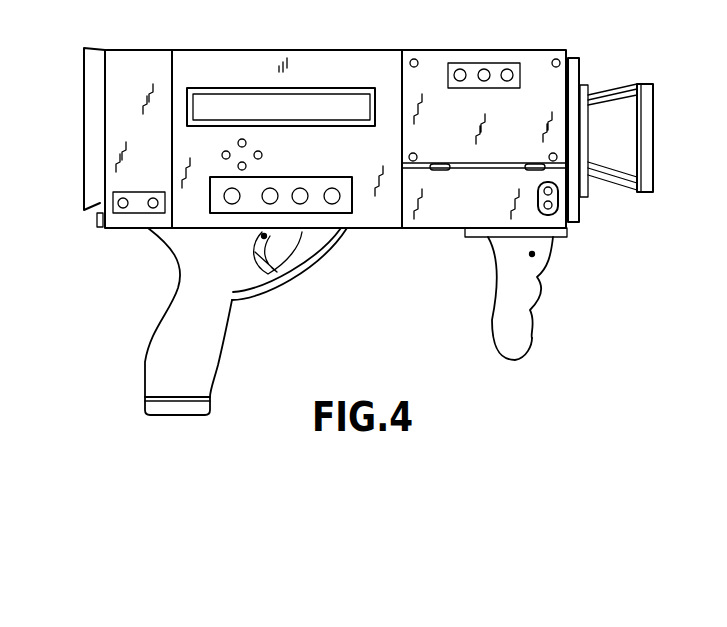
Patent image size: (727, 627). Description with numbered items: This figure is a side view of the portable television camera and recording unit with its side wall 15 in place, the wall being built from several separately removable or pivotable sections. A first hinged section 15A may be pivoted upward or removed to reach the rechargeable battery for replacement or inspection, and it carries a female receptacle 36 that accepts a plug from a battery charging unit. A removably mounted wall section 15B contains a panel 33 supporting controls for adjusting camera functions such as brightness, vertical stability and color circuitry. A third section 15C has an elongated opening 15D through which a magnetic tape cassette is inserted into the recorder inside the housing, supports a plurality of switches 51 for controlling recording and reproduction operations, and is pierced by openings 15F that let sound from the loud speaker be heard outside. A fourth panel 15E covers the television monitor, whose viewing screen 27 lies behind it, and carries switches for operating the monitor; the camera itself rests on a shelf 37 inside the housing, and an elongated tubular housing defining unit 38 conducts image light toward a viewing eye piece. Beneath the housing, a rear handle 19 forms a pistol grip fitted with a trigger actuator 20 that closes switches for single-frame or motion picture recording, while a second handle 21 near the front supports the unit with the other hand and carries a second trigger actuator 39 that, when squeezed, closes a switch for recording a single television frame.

The side wall 15 is at (548, 55).
The first hinged section 15A is at (462, 212).
The wall section 15B is at (552, 90).
The third section 15C is at (318, 70).
The elongated opening 15D is at (223, 95).
The fourth panel 15E is at (157, 58).
The openings 15F is at (261, 156).
The rear handle 19 is at (157, 347).
The trigger actuator 20 is at (283, 273).
The second handle 21 is at (503, 330).
The viewing screen 27 is at (83, 158).
The panel 33 is at (490, 66).
The female receptacle 36 is at (560, 198).
The shelf 37 is at (140, 214).
The elongated tubular housing defining unit 38 is at (97, 218).
The second trigger actuator 39 is at (545, 275).
The switches 51 is at (347, 230).